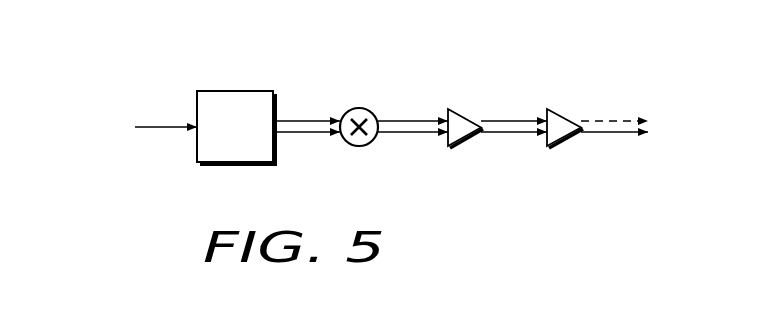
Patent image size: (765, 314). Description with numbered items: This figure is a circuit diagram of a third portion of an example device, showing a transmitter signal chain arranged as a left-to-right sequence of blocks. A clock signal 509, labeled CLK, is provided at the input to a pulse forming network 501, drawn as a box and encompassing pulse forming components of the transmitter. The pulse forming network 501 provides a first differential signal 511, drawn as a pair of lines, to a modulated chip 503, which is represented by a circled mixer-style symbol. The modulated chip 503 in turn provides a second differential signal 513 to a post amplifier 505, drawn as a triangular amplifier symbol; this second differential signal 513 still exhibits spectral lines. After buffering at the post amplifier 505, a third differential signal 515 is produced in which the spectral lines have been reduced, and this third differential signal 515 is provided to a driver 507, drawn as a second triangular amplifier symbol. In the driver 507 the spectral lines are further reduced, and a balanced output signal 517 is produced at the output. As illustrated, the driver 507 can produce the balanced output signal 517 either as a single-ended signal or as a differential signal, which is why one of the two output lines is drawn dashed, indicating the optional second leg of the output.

The pulse forming network 501 is at (243, 90).
The modulated chip 503 is at (358, 106).
The post amplifier 505 is at (460, 107).
The driver 507 is at (560, 107).
The clock signal 509 is at (160, 129).
The first differential signal 511 is at (313, 135).
The second differential signal 513 is at (413, 135).
The third differential signal 515 is at (512, 118).
The balanced output signal 517 is at (608, 104).